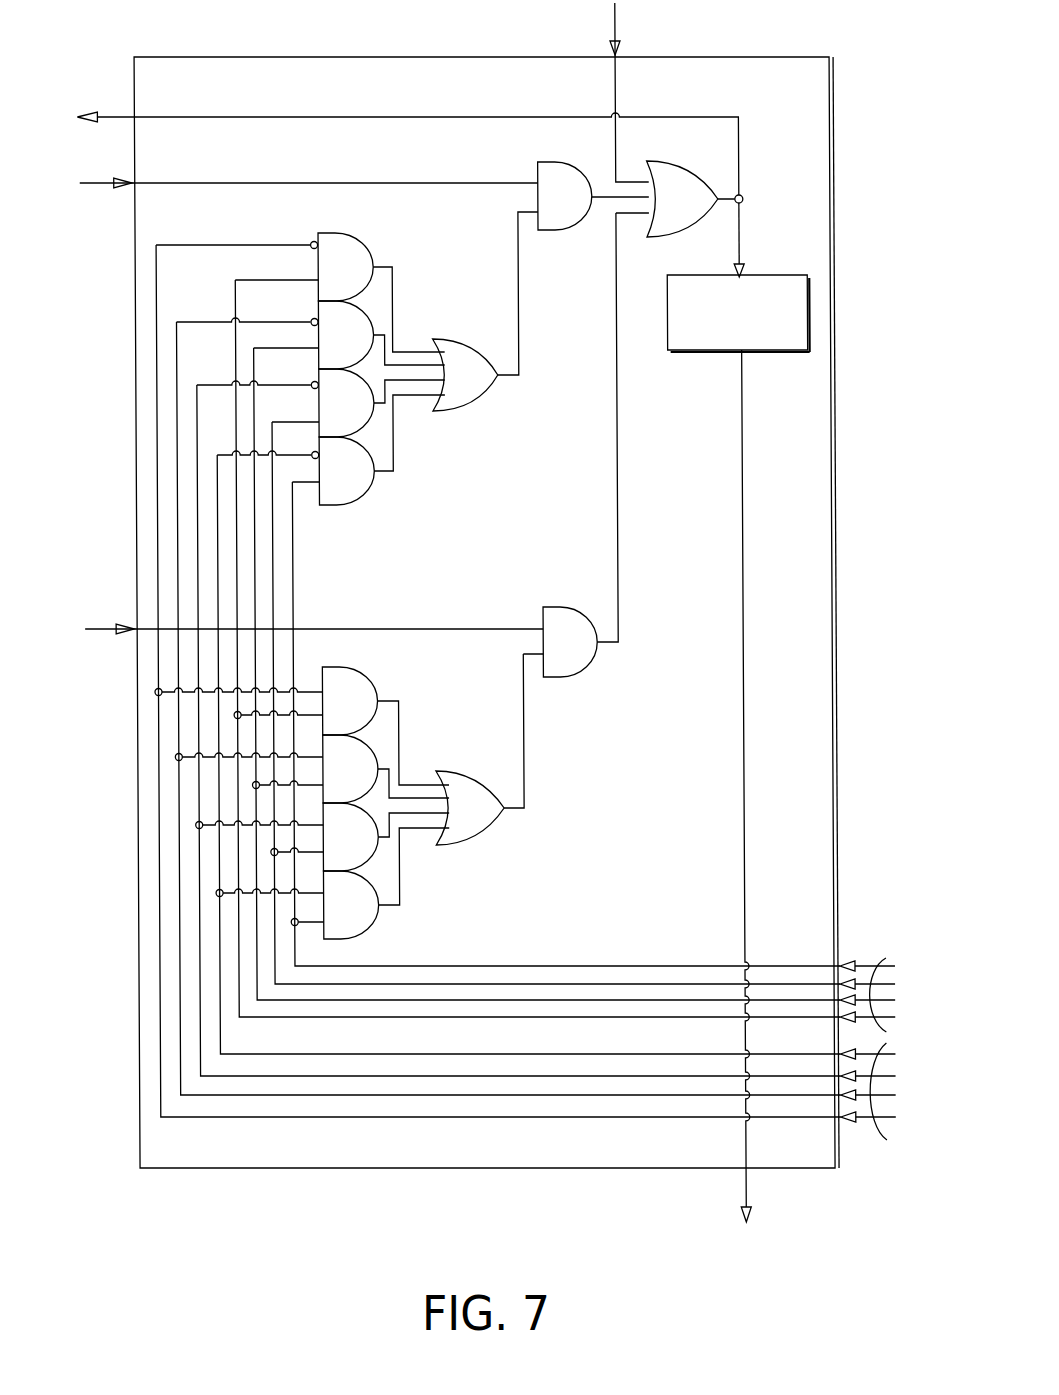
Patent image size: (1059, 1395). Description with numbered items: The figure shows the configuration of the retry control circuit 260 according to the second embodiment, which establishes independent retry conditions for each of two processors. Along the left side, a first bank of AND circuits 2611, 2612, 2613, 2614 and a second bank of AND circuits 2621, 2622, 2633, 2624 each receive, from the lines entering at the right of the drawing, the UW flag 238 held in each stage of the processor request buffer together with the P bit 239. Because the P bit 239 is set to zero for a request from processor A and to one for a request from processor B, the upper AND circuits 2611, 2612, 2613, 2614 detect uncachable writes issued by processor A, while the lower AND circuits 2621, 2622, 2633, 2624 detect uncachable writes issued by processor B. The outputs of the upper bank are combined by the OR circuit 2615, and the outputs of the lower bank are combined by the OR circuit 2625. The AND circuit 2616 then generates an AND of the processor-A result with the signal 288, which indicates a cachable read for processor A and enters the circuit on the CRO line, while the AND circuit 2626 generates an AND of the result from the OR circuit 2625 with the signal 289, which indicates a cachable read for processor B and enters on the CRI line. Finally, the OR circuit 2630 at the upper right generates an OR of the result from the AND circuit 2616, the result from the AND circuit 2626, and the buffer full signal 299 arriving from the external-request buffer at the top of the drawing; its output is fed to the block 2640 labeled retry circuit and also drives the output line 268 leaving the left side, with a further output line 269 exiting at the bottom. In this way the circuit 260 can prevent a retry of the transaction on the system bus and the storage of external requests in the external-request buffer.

The retry control circuit 260 is at (786, 57).
The output line 268 is at (114, 117).
The signal indicating a cachable read for processor A 288 is at (99, 186).
The signal indicating a cachable read for processor B 289 is at (101, 627).
The buffer full signal 299 is at (622, 29).
The AND circuit 2611 is at (340, 233).
The AND circuit 2612 is at (370, 310).
The AND circuit 2613 is at (378, 445).
The AND circuit 2614 is at (372, 497).
The OR circuit 2615 is at (468, 405).
The AND circuit 2616 is at (540, 170).
The AND circuit 2621 is at (348, 667).
The AND circuit 2622 is at (370, 748).
The AND gate 2633 is at (397, 866).
The AND circuit 2624 is at (372, 920).
The OR circuit 2625 is at (490, 825).
The AND circuit 2626 is at (573, 607).
The OR circuit 2630 is at (696, 176).
The retry circuit 2640 is at (772, 275).
The output line 269 is at (743, 1192).
The UW flag 238 is at (878, 958).
The P bit 239 is at (880, 1140).